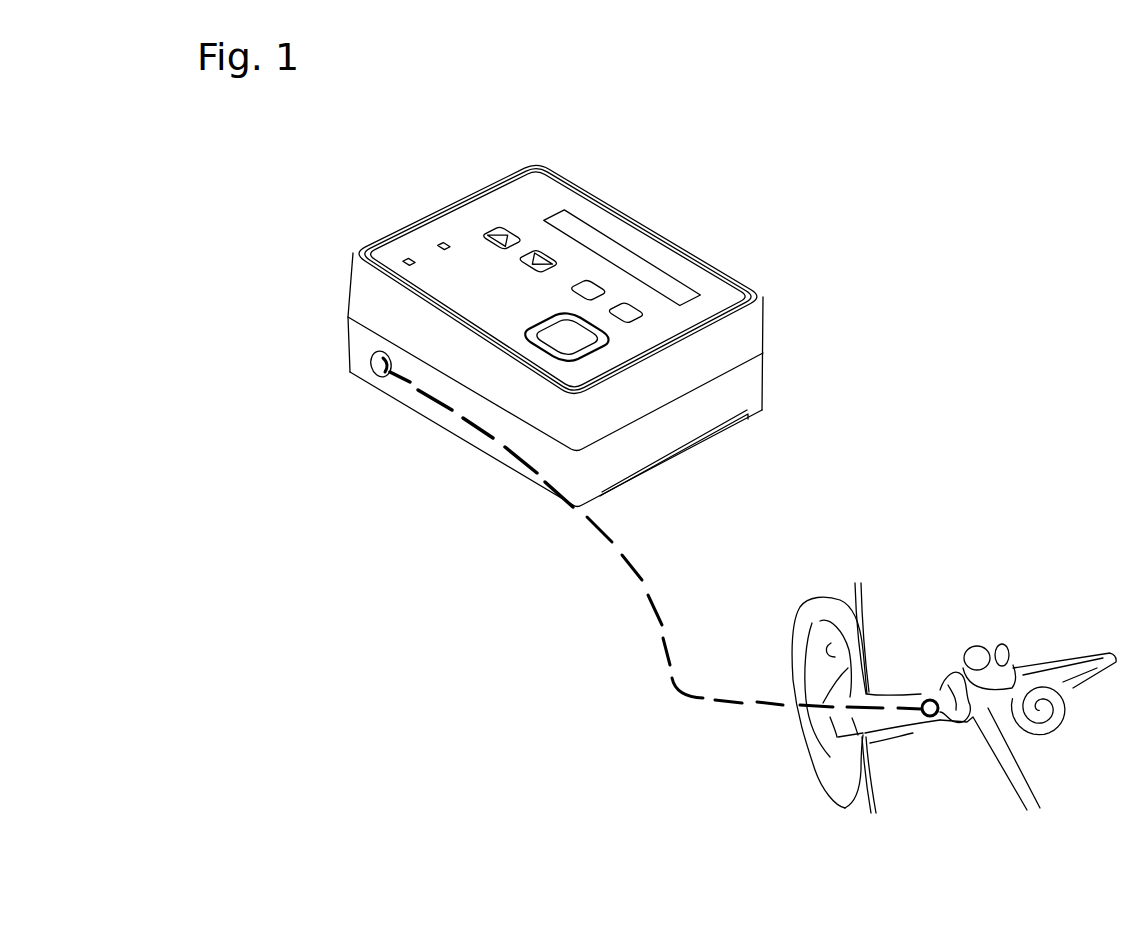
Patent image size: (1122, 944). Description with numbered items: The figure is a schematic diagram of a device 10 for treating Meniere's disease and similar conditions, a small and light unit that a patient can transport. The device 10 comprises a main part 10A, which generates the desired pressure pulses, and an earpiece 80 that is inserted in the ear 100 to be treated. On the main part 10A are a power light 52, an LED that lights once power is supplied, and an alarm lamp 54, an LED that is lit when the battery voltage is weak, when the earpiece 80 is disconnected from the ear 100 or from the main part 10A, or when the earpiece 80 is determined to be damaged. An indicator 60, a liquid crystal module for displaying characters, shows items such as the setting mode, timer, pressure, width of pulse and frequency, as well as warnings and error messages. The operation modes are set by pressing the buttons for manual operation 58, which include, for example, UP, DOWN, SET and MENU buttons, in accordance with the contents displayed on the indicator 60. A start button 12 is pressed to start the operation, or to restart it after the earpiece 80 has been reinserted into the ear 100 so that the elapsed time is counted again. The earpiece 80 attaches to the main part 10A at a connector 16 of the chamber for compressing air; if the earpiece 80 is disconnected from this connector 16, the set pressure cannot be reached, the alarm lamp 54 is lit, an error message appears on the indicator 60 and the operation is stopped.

The device for the treatment 10 is at (913, 258).
The main part of the device for the treatment 10A is at (680, 237).
The start button 12 is at (588, 357).
The connector 16 is at (373, 367).
The power light 52 is at (443, 243).
The alarm lamp 54 is at (410, 260).
The buttons for manual operation 58 is at (640, 307).
The indicator 60 is at (687, 283).
The earpiece 80 is at (930, 717).
The ear 100 is at (862, 516).